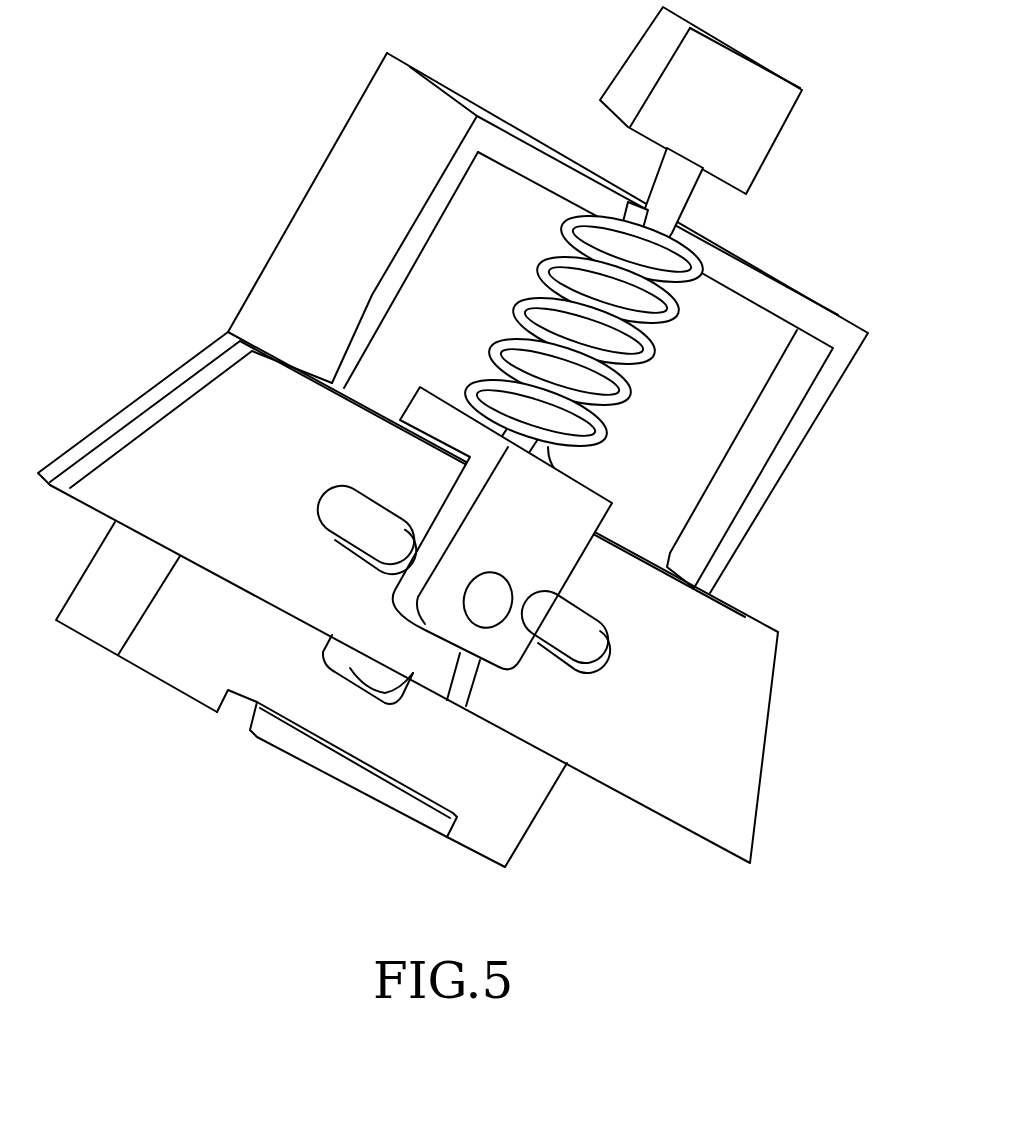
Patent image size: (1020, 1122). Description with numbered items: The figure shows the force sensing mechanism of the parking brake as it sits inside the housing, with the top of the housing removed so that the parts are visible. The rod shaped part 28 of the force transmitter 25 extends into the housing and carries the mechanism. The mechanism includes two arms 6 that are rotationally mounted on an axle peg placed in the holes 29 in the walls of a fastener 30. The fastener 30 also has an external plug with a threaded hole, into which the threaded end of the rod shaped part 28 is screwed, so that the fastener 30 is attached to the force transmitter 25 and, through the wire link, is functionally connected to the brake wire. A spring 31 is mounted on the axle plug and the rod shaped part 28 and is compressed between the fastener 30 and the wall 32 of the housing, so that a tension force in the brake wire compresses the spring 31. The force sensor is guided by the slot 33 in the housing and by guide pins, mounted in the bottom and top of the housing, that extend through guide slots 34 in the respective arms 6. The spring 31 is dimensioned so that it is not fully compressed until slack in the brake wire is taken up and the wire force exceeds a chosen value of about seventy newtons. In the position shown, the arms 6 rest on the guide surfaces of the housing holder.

The arm 6 is at (704, 847).
The force transmitter 25 is at (757, 90).
The rod shaped part 28 is at (685, 187).
The hole 29 is at (480, 605).
The fastener 30 is at (627, 647).
The spring 31 is at (530, 315).
The wall 32 is at (755, 305).
The slot 33 is at (455, 649).
The guide slot 34 is at (352, 522).